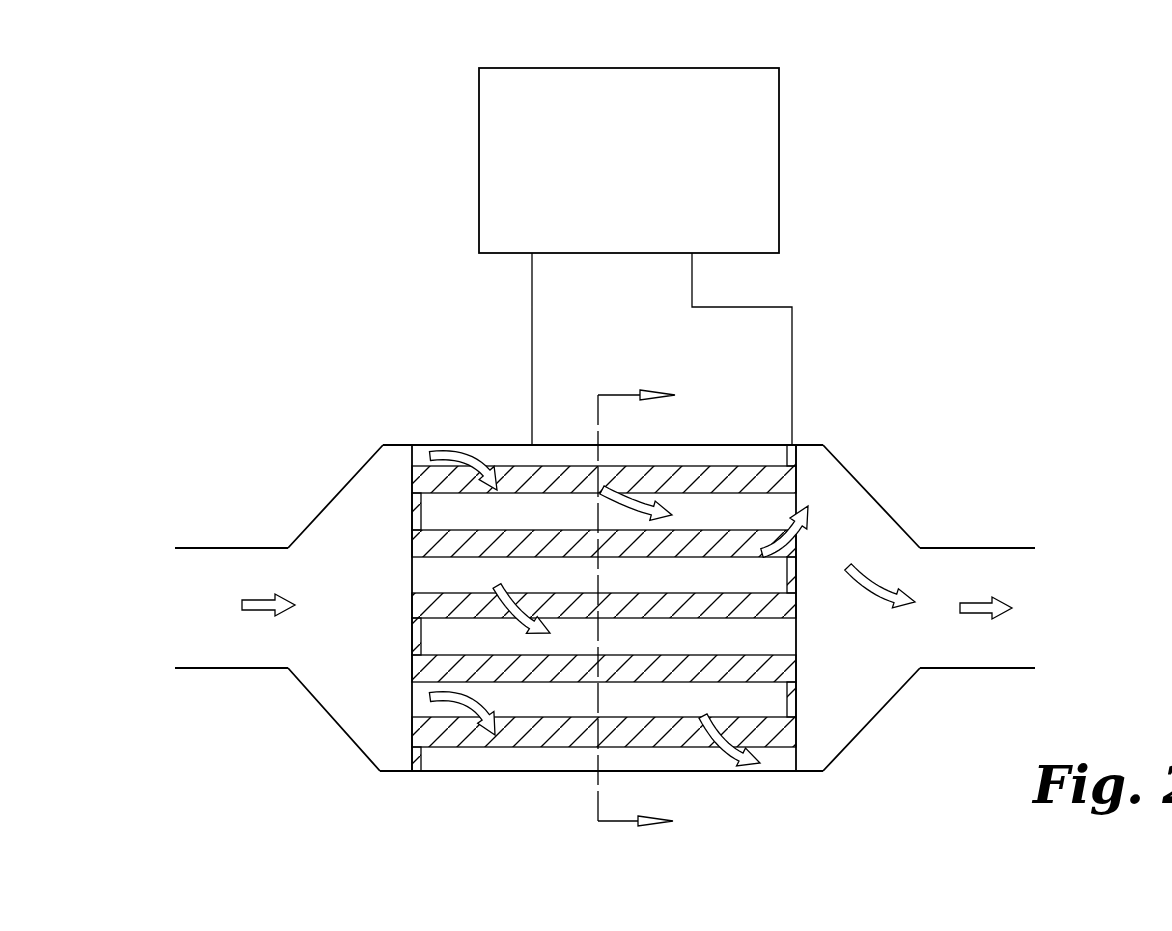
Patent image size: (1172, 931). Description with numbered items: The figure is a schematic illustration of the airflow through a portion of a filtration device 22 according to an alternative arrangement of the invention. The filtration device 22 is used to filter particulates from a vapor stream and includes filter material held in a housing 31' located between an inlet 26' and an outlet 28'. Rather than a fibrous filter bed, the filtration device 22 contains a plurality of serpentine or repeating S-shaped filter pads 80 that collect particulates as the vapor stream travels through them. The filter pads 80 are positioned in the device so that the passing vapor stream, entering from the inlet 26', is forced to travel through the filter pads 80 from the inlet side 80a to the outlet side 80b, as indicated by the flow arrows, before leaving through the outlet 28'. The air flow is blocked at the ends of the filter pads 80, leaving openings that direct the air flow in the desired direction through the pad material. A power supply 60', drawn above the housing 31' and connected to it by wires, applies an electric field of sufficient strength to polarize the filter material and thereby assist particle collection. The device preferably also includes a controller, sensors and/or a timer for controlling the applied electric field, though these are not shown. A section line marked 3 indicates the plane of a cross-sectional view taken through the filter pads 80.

The filtration device 22 is at (256, 196).
The inlet 26' is at (235, 573).
The outlet 28' is at (944, 571).
The housing 31' is at (335, 592).
The power supply 60' is at (672, 256).
The filter pads 80 is at (412, 585).
The inlet side 80a is at (688, 591).
The outlet side 80b is at (752, 527).
The section line 3- 3 is at (649, 613).